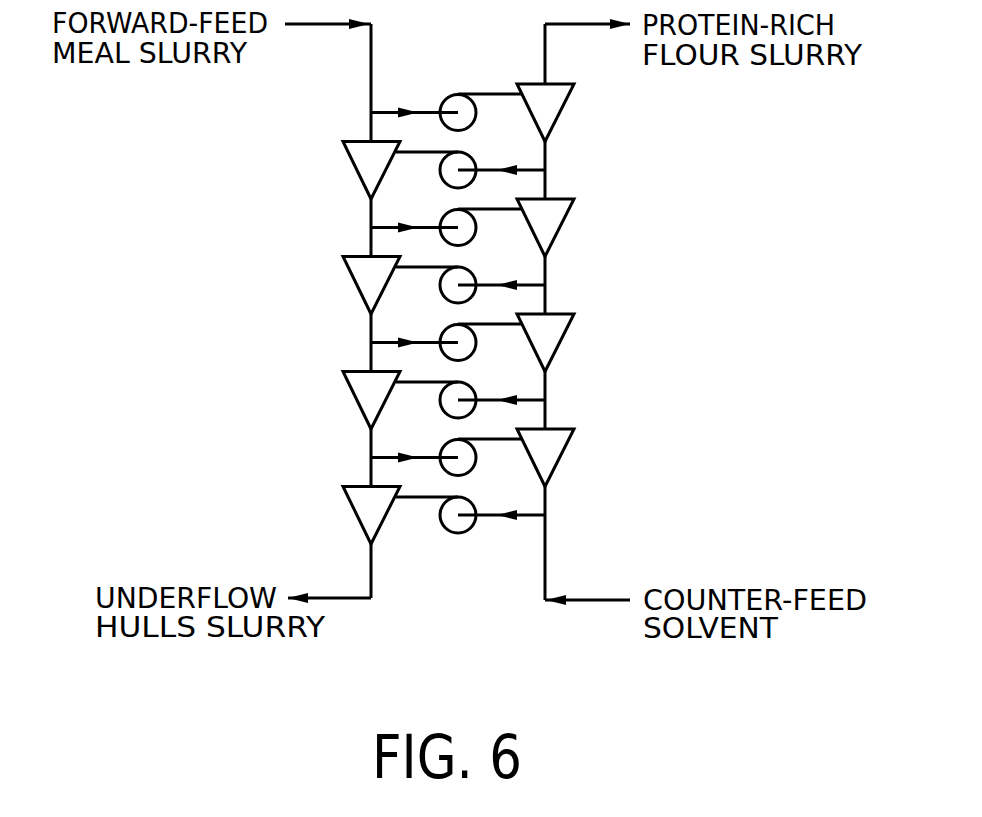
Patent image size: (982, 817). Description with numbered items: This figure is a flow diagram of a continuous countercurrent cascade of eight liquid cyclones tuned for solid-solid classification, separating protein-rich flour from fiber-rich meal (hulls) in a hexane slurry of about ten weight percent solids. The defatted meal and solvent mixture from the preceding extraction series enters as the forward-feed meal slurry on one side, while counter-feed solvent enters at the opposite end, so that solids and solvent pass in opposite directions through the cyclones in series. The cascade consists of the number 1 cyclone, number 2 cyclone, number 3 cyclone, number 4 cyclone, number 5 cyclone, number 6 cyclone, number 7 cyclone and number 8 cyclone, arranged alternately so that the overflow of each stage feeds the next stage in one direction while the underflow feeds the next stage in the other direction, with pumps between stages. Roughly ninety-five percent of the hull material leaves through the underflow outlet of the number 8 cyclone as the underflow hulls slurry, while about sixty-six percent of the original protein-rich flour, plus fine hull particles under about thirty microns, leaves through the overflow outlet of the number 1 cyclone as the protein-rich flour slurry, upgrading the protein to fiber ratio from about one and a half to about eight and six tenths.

The number 1 cyclone 1 is at (571, 102).
The number 2 cyclone 2 is at (353, 161).
The number 3 cyclone 3 is at (571, 217).
The number 4 cyclone 4 is at (353, 276).
The number 5 cyclone 5 is at (571, 332).
The number 6 cyclone 6 is at (353, 391).
The number 7 cyclone 7 is at (571, 447).
The number 8 cyclone 8 is at (353, 506).